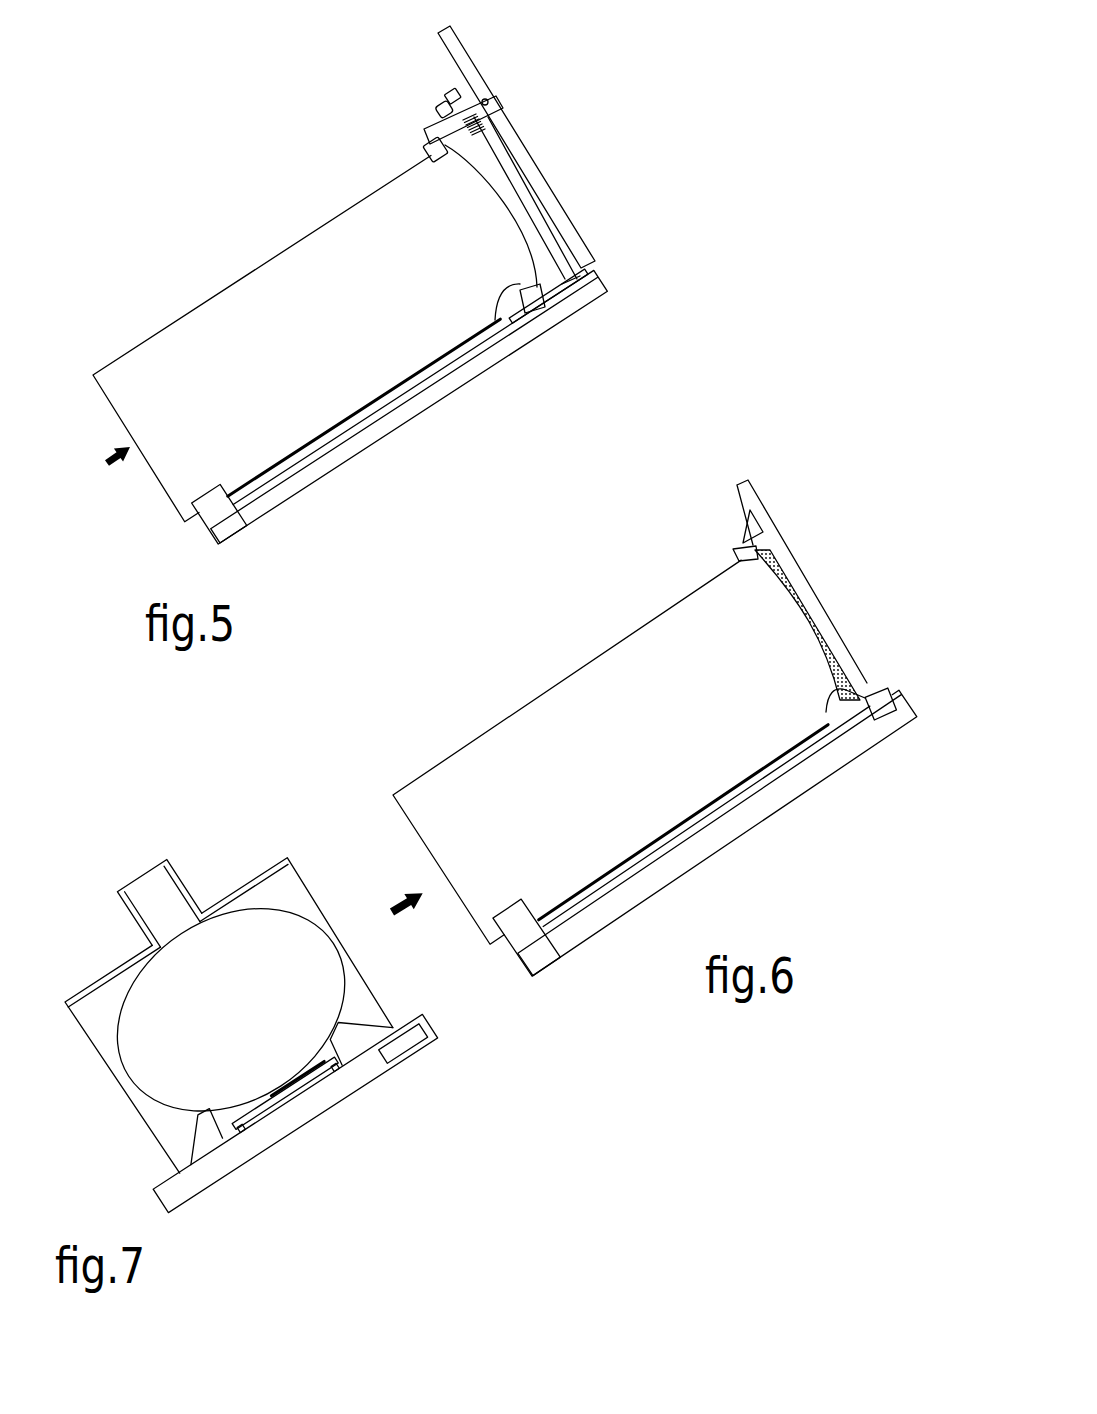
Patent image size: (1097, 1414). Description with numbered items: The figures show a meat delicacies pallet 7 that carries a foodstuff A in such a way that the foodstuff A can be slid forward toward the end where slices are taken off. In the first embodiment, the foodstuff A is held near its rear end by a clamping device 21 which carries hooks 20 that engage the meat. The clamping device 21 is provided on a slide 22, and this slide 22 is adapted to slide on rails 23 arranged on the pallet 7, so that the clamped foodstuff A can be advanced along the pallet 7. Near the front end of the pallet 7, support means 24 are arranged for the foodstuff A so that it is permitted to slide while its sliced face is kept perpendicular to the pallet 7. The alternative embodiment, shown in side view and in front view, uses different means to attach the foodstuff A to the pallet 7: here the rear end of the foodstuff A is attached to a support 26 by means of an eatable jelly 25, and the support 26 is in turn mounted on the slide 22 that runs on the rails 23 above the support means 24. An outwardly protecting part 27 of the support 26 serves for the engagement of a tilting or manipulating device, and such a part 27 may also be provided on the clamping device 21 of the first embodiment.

In FIG. 5, the foodstuff A is at (212, 347).
In FIG. 6, the foodstuff A is at (528, 728).
In FIG. 7, the foodstuff A is at (163, 1010).
In FIG. 5, the pallet 7 is at (430, 397).
In FIG. 6, the pallet 7 is at (767, 803).
In FIG. 7, the pallet 7 is at (408, 1042).
In FIG. 5, the hooks 20 is at (440, 163).
In FIG. 5, the clamping device 21 is at (516, 108).
In FIG. 5, the slide 22 is at (535, 315).
In FIG. 7, the slide 22 is at (270, 1105).
In FIG. 5, the rails 23 is at (345, 442).
In FIG. 6, the rails 23 is at (683, 822).
In FIG. 7, the rails 23 is at (332, 1072).
In FIG. 5, the support means 24 is at (220, 508).
In FIG. 6, the support means 24 is at (520, 933).
In FIG. 7, the support means 24 is at (353, 1035).
In FIG. 6, the eatable jelly 25 is at (843, 713).
In FIG. 6, the support 26 is at (800, 578).
In FIG. 7, the support 26 is at (275, 893).
In FIG. 5, the outwardly protecting part 27 is at (462, 57).
In FIG. 6, the outwardly protecting part 27 is at (752, 502).
In FIG. 7, the outwardly protecting part 27 is at (150, 893).